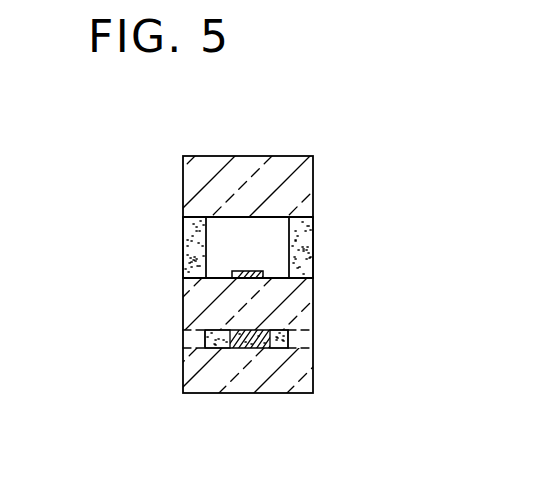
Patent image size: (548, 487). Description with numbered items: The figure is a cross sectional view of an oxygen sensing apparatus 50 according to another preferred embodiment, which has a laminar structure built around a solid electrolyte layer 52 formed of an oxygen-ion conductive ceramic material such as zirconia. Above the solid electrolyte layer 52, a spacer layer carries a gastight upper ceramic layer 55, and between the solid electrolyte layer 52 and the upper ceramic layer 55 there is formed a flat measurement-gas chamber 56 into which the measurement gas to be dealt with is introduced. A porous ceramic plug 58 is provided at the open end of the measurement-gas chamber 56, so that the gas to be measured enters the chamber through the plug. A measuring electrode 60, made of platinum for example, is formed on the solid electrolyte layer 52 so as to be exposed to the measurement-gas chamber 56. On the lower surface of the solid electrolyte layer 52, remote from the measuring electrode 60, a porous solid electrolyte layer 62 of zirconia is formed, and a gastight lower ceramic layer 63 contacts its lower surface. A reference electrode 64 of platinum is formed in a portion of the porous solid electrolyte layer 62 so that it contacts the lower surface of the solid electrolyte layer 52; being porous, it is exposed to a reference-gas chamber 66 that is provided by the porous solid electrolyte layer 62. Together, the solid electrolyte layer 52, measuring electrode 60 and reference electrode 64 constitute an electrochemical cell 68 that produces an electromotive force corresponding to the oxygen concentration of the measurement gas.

The oxygen sensing apparatus 50 is at (289, 104).
The solid electrolyte layer 52 is at (305, 296).
The upper ceramic layer 55 is at (195, 183).
The measurement-gas chamber 56 is at (277, 233).
The porous ceramic plug 58 is at (195, 250).
The measuring electrode 60 is at (258, 269).
The porous solid electrolyte layer 62 is at (213, 348).
The lower ceramic layer 63 is at (282, 383).
The reference electrode 64 is at (264, 330).
The reference-gas chamber 66 is at (240, 404).
The electrochemical cell 68 is at (378, 247).